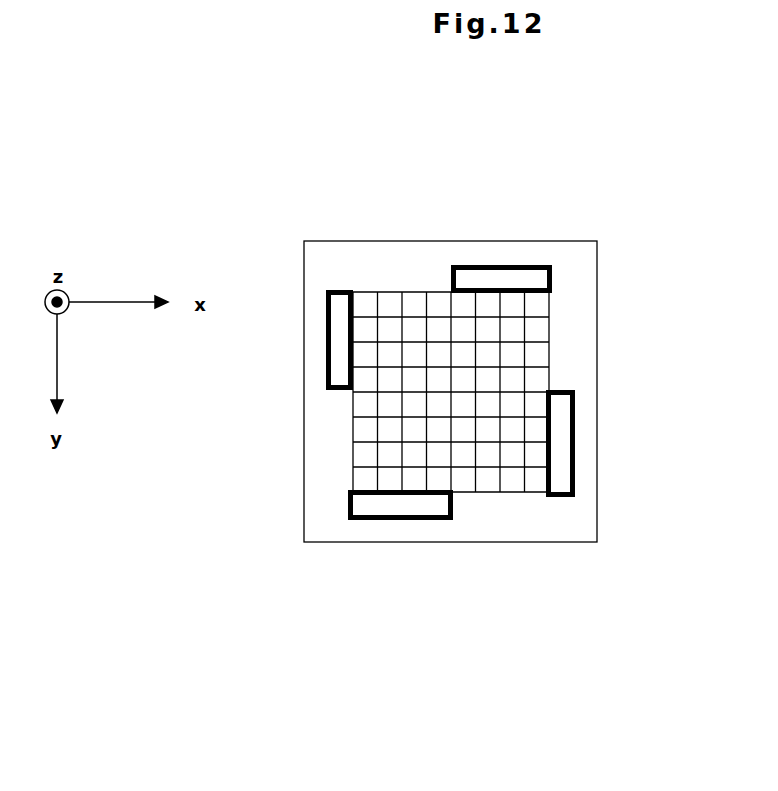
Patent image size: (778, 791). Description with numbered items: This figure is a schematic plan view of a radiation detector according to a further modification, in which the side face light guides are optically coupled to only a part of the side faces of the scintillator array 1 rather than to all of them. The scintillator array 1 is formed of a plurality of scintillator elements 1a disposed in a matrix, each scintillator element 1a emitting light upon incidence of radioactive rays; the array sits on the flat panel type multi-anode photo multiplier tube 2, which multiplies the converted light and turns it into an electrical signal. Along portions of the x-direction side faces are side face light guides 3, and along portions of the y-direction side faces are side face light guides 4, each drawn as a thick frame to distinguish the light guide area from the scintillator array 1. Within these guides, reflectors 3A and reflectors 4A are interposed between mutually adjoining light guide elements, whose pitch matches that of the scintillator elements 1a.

The scintillator array 1 is at (409, 351).
The scintillator element 1a is at (388, 302).
The flat panel type multi-anode photo multiplier tube 2 is at (598, 393).
The side face light guide 3 is at (439, 409).
The reflector 3A is at (340, 342).
The side face light guide 4 is at (450, 406).
The reflector 4A is at (505, 286).